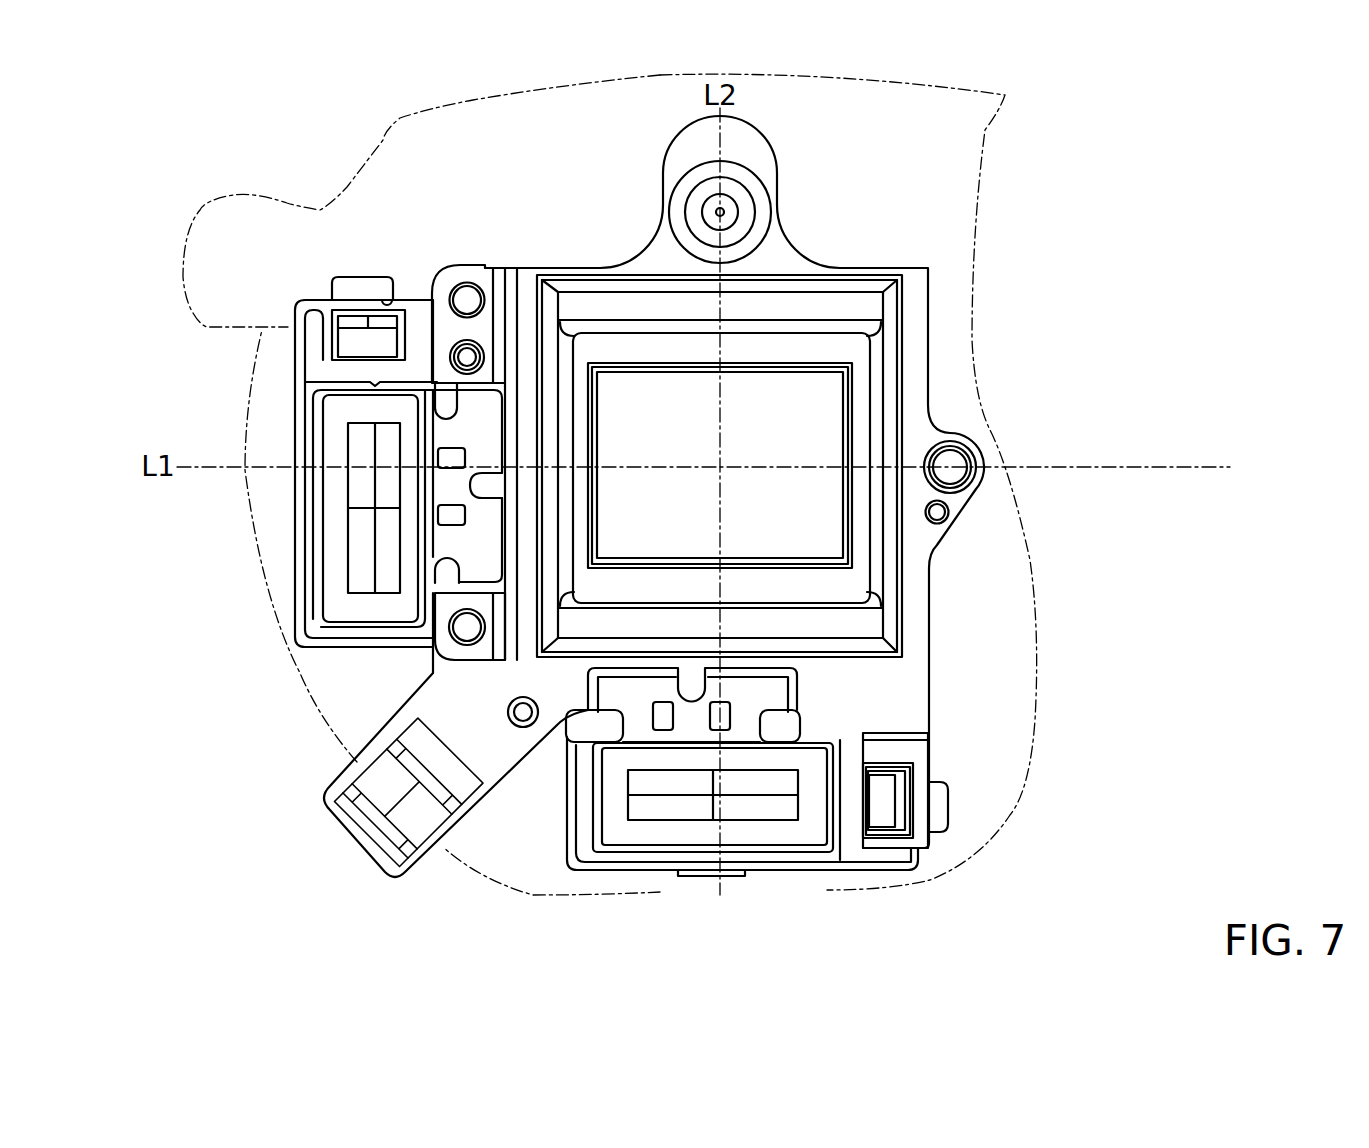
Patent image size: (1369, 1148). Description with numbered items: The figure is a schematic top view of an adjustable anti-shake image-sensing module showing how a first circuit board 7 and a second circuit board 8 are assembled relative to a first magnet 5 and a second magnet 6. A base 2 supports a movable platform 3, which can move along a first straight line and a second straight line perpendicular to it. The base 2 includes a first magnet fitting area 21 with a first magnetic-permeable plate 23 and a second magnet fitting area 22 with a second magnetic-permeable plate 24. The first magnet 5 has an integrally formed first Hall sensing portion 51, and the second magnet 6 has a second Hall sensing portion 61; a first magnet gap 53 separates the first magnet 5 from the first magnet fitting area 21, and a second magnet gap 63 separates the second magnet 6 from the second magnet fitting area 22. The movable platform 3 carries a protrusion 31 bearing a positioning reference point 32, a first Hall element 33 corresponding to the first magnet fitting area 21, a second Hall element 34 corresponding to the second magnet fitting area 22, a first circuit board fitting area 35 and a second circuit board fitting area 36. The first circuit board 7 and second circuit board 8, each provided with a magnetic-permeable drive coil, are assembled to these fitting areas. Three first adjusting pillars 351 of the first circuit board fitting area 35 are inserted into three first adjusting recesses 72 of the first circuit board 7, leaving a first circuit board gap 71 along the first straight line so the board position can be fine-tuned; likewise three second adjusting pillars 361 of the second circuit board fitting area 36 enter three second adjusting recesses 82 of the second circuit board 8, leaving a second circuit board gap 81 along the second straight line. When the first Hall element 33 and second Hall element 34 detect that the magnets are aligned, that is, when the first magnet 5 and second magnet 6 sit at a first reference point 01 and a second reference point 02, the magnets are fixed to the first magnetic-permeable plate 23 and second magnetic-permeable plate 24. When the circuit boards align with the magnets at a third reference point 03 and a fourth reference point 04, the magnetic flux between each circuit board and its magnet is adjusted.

The base 2 is at (940, 378).
The movable platform 3 is at (947, 295).
The first magnet 5 is at (300, 353).
The second magnet 6 is at (860, 866).
The first circuit board 7 is at (318, 532).
The second circuit board 8 is at (650, 856).
The first reference point 01 is at (368, 343).
The second reference point 02 is at (878, 798).
The third reference point 03 is at (445, 487).
The fourth reference point 04 is at (692, 725).
The first magnet fitting area 21 is at (312, 522).
The second magnet fitting area 22 is at (733, 868).
The first magnetic-permeable plate 23 is at (373, 287).
The second magnetic-permeable plate 24 is at (835, 872).
The protrusion 31 is at (757, 143).
The positioning reference point 32 is at (722, 212).
The first Hall element 33 is at (388, 335).
The second Hall element 34 is at (880, 782).
The first circuit board fitting area 35 is at (512, 400).
The first adjusting pillar 351 is at (443, 392).
The second circuit board fitting area 36 is at (790, 688).
The second adjusting pillar 361 is at (693, 680).
The first Hall sensing portion 51 is at (293, 298).
The first magnet gap 53 is at (298, 496).
The second Hall sensing portion 61 is at (885, 855).
The second magnet gap 63 is at (707, 868).
The first circuit board gap 71 is at (440, 405).
The first adjusting recess 72 is at (445, 458).
The second circuit board gap 81 is at (585, 792).
The second adjusting recess 82 is at (590, 722).